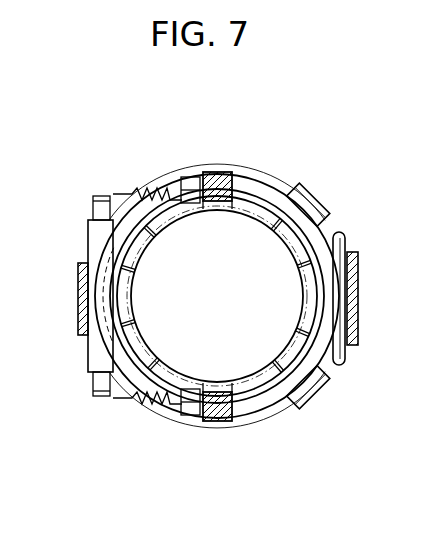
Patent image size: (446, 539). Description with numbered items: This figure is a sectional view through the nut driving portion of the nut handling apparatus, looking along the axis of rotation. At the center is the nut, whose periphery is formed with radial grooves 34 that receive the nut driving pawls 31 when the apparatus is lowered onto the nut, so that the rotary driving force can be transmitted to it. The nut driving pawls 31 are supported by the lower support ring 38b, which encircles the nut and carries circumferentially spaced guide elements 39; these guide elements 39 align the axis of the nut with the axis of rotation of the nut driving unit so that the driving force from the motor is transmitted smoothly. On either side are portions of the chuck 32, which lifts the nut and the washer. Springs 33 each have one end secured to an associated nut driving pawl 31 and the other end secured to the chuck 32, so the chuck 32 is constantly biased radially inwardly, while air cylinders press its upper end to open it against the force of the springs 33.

The nut driving pawl 31 is at (226, 176).
The chuck 32 is at (78, 299).
The spring 33 is at (132, 398).
The radial groove 34 is at (133, 252).
The lower support ring 38b is at (268, 400).
The guide element 39 is at (314, 200).